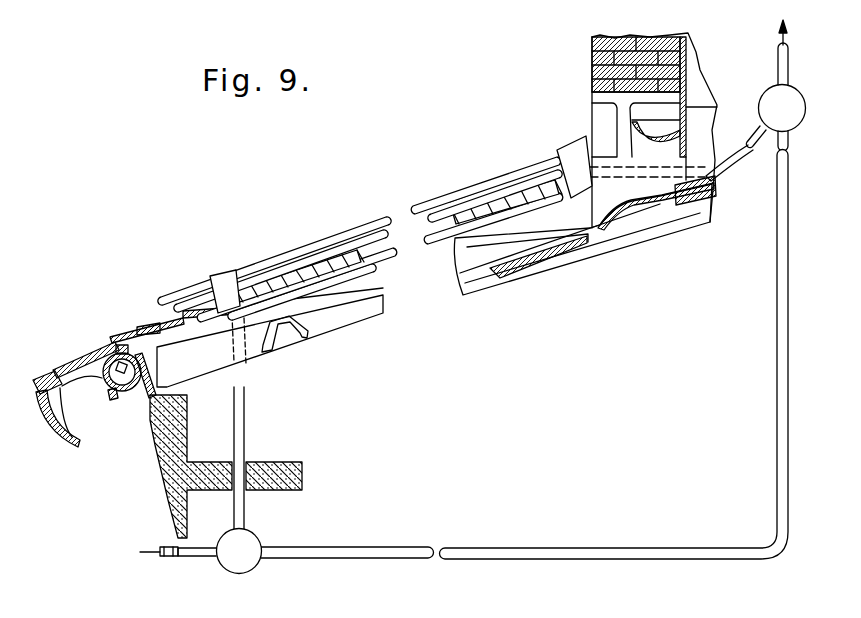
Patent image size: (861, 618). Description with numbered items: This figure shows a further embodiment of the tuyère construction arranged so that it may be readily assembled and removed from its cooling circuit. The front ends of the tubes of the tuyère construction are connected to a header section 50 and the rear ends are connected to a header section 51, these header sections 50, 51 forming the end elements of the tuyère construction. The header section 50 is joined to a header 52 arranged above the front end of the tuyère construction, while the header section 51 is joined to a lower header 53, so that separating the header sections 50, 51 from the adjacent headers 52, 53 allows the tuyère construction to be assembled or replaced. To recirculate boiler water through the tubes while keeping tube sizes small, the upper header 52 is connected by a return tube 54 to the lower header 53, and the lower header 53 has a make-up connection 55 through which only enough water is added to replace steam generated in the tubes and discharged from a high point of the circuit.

The header section 50 is at (560, 148).
The header section 51 is at (222, 272).
The header 52 is at (793, 97).
The header 53 is at (250, 543).
The return tube 54 is at (545, 552).
The make-up connection 55 is at (200, 552).